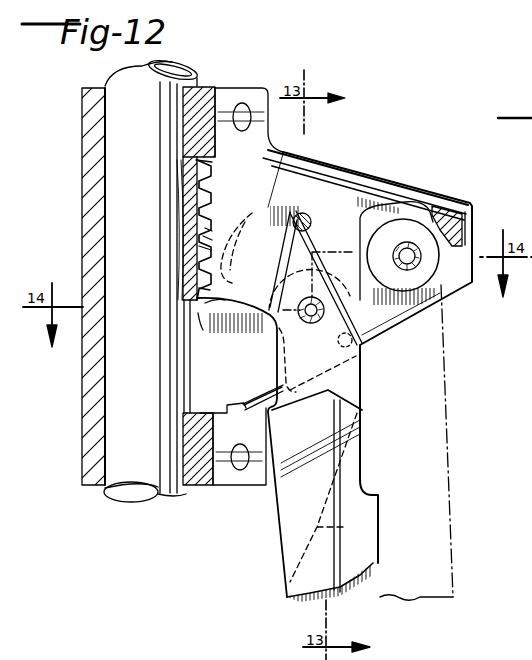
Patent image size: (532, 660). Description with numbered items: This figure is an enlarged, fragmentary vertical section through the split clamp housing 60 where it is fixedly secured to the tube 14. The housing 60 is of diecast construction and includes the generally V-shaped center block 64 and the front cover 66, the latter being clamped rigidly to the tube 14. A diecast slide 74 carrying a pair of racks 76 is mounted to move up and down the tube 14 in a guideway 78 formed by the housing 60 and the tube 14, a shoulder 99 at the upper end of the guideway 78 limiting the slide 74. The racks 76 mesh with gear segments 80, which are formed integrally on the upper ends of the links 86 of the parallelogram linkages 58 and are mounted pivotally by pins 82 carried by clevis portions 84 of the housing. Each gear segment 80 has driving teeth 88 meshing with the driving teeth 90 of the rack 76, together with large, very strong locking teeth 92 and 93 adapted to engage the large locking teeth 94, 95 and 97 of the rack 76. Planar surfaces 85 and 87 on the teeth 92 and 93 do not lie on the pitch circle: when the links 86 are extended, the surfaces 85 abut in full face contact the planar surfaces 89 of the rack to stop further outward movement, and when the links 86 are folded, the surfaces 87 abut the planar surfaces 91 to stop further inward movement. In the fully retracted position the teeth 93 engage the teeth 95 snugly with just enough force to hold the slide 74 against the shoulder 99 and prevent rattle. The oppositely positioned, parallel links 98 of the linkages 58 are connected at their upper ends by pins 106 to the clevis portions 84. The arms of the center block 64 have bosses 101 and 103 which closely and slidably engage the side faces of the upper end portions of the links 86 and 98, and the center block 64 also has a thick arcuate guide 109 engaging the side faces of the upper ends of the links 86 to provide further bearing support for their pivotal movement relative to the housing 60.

The tube 14 is at (108, 82).
The parallelogram linkages 58 is at (277, 558).
The split clamp housing 60 is at (370, 125).
The center block 64 is at (383, 177).
The front cover 66 is at (80, 198).
The slide 74 is at (197, 198).
The racks 76 is at (210, 262).
The guideway 78 is at (200, 160).
The gear segments 80 is at (270, 205).
The pins 82 is at (308, 316).
The clevis portions 84 is at (277, 400).
The planar surface 85 is at (203, 218).
The links 86 is at (352, 463).
The planar surface 87 is at (200, 288).
The driving teeth 88 is at (206, 235).
The planar surface 89 is at (204, 214).
The driving teeth 90 is at (207, 242).
The planar surface 91 is at (202, 318).
The locking tooth 92 is at (210, 198).
The locking tooth 93 is at (208, 305).
The locking tooth 94 is at (205, 163).
The locking tooth 95 is at (205, 250).
The locking tooth 97 is at (185, 302).
The links 98 is at (447, 445).
The shoulder 99 is at (249, 122).
The boss 101 is at (360, 348).
The boss 103 is at (388, 238).
The pins 106 is at (416, 261).
The arcuate guide 109 is at (305, 212).